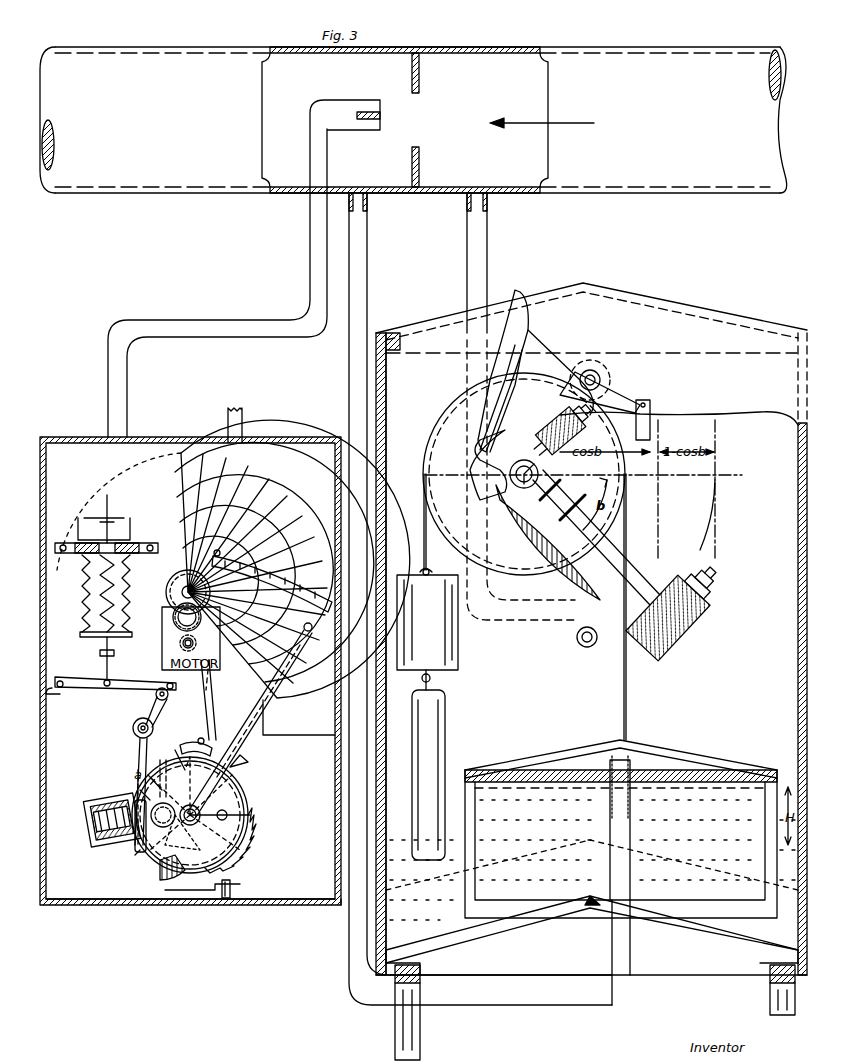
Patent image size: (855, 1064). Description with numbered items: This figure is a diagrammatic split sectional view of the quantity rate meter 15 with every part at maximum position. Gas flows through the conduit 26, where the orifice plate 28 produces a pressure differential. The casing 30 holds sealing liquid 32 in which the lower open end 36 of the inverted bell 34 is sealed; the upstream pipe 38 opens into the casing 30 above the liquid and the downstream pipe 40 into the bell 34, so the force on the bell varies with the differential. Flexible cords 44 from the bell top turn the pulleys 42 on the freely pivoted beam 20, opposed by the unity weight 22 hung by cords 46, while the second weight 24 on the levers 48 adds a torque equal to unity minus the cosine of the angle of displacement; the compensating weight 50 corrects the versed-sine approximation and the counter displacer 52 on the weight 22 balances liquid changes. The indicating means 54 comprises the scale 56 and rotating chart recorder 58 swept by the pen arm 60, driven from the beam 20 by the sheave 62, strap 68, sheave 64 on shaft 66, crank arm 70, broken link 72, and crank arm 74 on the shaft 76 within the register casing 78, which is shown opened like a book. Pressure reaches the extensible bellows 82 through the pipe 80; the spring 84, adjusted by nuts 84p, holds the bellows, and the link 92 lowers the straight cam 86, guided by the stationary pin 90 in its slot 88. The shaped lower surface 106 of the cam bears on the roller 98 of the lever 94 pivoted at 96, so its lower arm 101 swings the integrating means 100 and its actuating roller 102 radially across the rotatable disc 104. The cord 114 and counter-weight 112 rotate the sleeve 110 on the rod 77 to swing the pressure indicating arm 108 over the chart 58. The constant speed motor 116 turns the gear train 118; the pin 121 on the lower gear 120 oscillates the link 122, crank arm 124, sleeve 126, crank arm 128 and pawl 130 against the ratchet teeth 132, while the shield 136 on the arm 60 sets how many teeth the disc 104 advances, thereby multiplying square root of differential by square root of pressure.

The quantity rate meter 15 is at (345, 920).
The freely pivoted beam 20 is at (510, 470).
The weight 22 is at (414, 580).
The second weight 24 is at (665, 655).
The conduit 26 is at (552, 195).
The orifice plate 28 is at (418, 193).
The casing 30 is at (600, 292).
The sealing liquid 32 is at (480, 918).
The inverted bell 34 is at (555, 752).
The lower open end 36 is at (512, 922).
The upstream pipe 38 is at (467, 253).
The downstream pipe 40 is at (368, 258).
The pulleys 42 is at (440, 430).
The flexible cords 44 is at (624, 700).
The cords 46 is at (422, 528).
The levers 48 is at (600, 560).
The compensating weight 50 is at (553, 422).
The counter displacer 52 is at (445, 705).
The indicating means 54 is at (295, 460).
The indicating scale 56 is at (285, 555).
The rotating chart recorder 58 is at (258, 492).
The arm 60 is at (312, 633).
The sheave 62 is at (478, 450).
The sheave 64 is at (512, 272).
The separate shaft 66 is at (603, 378).
The strap 68 is at (488, 400).
The crank arm 70 is at (628, 395).
The link 72 is at (662, 430).
The crank arm 74 is at (250, 841).
The shaft 76 is at (250, 815).
The rod 77 is at (128, 800).
The register casing 78 is at (128, 905).
The pipe 80 is at (310, 258).
The extensible bellows 82 is at (80, 596).
The spring 84 is at (78, 573).
The nuts 84p is at (100, 515).
The cam 86 is at (128, 690).
The slot 88 is at (65, 680).
The stationary pin 90 is at (62, 670).
The link 92 is at (100, 655).
The lever 94 is at (130, 762).
The pivot 96 is at (133, 728).
The roller 98 is at (160, 692).
The integrating means 100 is at (110, 845).
The lower arm 101 is at (135, 750).
The actuating roller 102 is at (135, 855).
The rotatable disc 104 is at (246, 796).
The lower surface 106 is at (170, 705).
The indicating arm 108 is at (226, 710).
The sleeve 110 is at (130, 780).
The counter-weight 112 is at (140, 870).
The cord 114 is at (176, 724).
The constant speed motor 116 is at (170, 624).
The gear train 118 is at (173, 614).
The lower gear 120 is at (180, 645).
The pin 121 is at (180, 648).
The link 122 is at (210, 683).
The crank arm 124 is at (228, 826).
The sleeve 126 is at (200, 858).
The crank arm 128 is at (160, 755).
The pawl 130 is at (190, 733).
The ratchet teeth 132 is at (242, 780).
The shield 136 is at (240, 760).